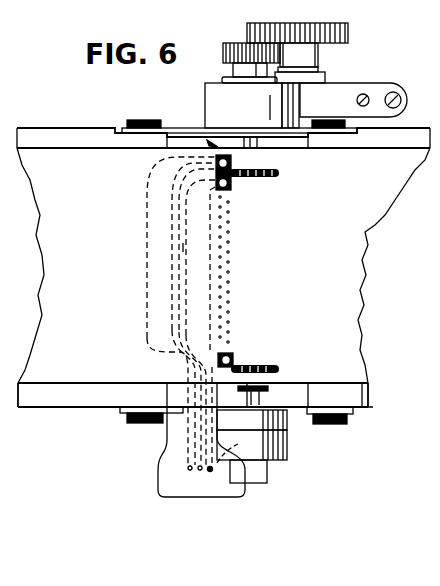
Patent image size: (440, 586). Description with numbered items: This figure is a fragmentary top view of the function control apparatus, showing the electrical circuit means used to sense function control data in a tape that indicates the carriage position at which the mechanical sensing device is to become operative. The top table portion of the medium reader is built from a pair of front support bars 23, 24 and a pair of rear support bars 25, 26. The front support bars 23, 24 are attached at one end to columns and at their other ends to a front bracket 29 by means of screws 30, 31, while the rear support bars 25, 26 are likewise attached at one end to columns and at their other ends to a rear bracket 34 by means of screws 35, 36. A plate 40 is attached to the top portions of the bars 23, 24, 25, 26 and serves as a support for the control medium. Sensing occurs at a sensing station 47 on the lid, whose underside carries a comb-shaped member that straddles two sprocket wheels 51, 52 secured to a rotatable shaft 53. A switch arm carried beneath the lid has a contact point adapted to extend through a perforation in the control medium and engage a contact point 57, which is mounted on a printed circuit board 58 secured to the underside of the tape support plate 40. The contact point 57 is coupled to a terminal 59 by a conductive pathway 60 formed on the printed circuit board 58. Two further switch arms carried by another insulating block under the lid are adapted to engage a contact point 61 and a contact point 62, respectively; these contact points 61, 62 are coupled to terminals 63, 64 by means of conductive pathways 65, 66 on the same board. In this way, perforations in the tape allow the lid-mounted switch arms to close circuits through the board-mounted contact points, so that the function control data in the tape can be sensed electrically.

The front support bar 23 is at (56, 128).
The front support bar 24 is at (403, 128).
The rear support bar 25 is at (50, 407).
The rear support bar 26 is at (366, 410).
The front bracket 29 is at (180, 128).
The screw 30 is at (136, 120).
The screw 31 is at (336, 120).
The rear bracket 34 is at (167, 415).
The screw 35 is at (133, 425).
The screw 36 is at (325, 422).
The plate 40 is at (367, 222).
The sensing station 47 is at (216, 146).
The sprocket wheel 51 is at (278, 365).
The sprocket wheel 52 is at (279, 173).
The rotatable shaft 53 is at (258, 398).
The contact point 57 is at (233, 357).
The printed circuit board 58 is at (150, 308).
The terminal 59 is at (210, 472).
The conductive pathway 60 is at (238, 450).
The contact point 61 is at (233, 165).
The contact point 62 is at (232, 184).
The terminal 63 is at (190, 471).
The terminal 64 is at (200, 495).
The conductive pathway 65 is at (172, 219).
The conductive pathway 66 is at (183, 247).